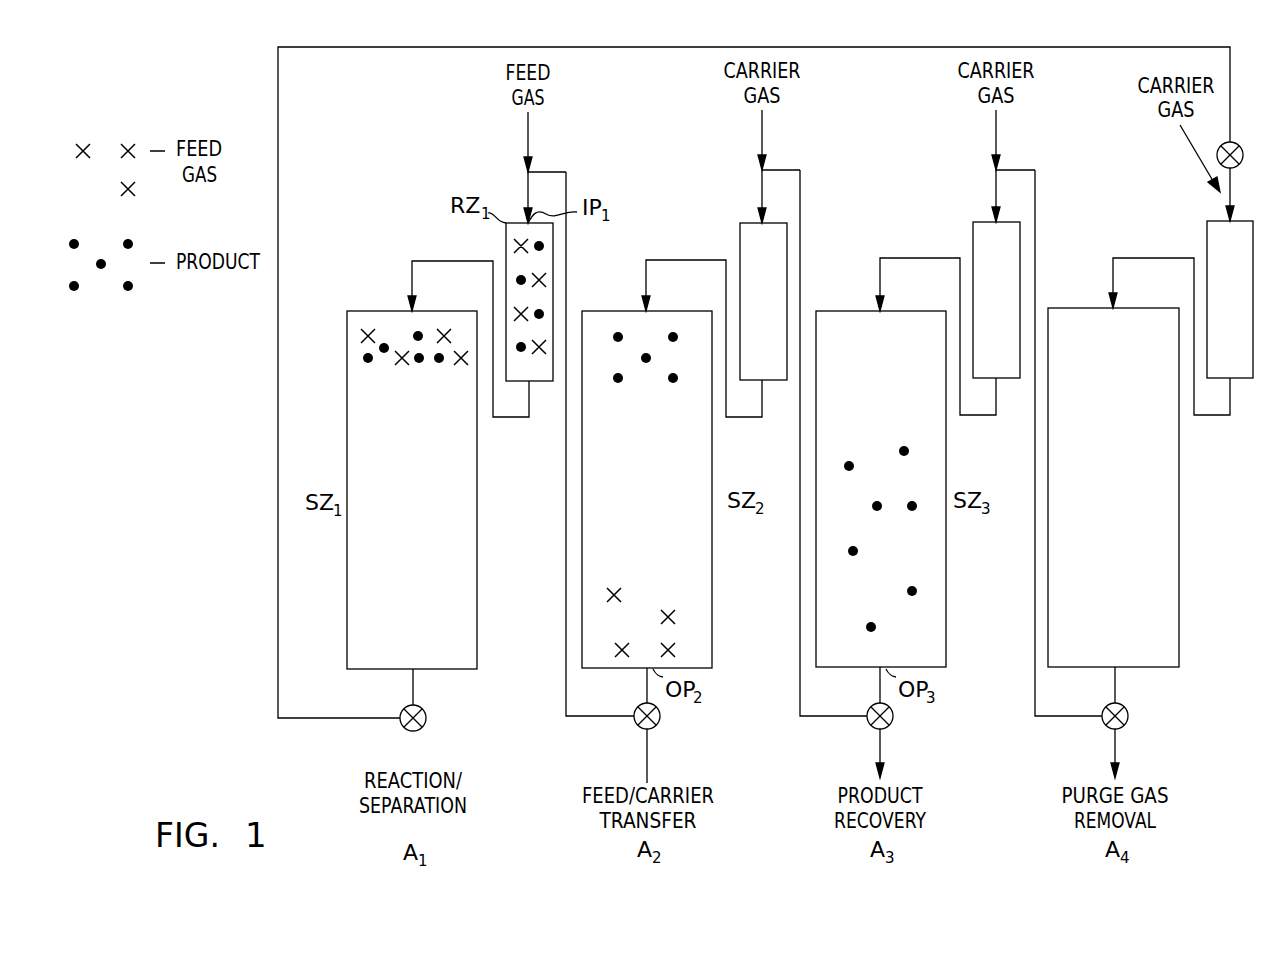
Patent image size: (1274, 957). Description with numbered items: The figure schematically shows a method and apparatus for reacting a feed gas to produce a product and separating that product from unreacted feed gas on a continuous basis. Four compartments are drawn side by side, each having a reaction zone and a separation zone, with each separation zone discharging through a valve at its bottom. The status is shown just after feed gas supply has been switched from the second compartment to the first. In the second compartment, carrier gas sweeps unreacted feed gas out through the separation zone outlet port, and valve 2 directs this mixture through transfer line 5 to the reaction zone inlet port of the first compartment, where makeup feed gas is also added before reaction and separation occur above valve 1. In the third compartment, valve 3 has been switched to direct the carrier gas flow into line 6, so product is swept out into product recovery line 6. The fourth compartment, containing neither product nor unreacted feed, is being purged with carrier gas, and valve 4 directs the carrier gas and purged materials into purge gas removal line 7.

The valve 1 is at (404, 727).
The valve 2 is at (637, 726).
The valve 3 is at (889, 727).
The valve 4 is at (1124, 727).
The transfer line 5 is at (566, 468).
The product recovery line 6 is at (880, 749).
The purge gas removal line 7 is at (1115, 749).